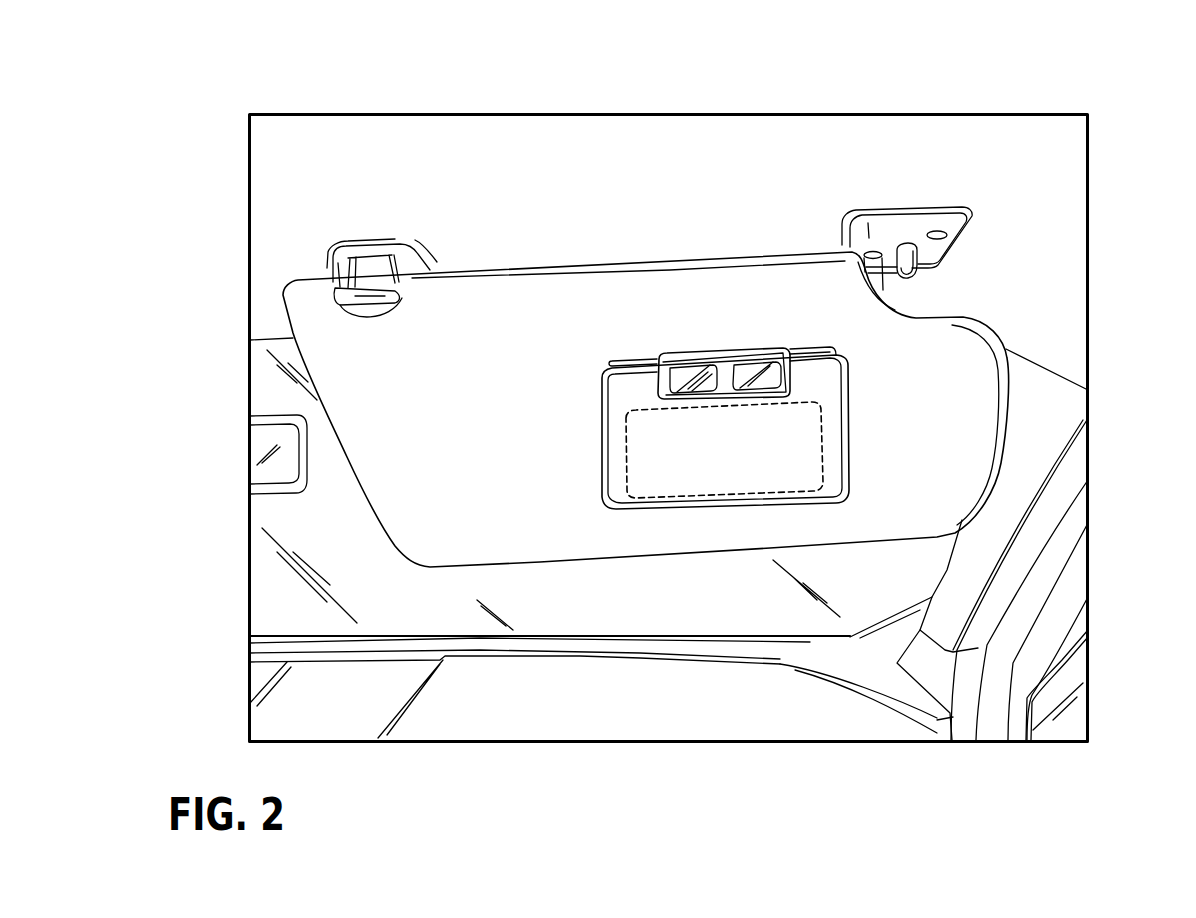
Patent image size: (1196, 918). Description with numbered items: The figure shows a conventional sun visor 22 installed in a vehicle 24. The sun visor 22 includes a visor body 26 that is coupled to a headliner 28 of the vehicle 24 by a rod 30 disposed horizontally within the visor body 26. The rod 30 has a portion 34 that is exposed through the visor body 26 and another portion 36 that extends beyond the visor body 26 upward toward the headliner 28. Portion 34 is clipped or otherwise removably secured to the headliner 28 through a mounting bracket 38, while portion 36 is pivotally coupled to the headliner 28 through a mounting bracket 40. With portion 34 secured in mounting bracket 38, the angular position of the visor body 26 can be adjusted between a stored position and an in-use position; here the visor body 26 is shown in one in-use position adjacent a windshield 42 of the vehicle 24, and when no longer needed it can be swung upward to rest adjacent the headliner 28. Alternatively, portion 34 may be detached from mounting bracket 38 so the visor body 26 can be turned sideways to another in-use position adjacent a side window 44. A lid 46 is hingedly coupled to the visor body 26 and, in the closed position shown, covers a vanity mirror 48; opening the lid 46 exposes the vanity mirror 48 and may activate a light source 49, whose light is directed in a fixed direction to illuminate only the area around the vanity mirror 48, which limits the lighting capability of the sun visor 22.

The sun visor 22 is at (965, 303).
The vehicle 24 is at (1047, 95).
The visor body 26 is at (930, 430).
The headliner 28 is at (712, 155).
The rod 30 is at (888, 240).
The portion 34 is at (335, 290).
The portion 36 is at (947, 265).
The mounting bracket 38 is at (370, 270).
The mounting bracket 40 is at (884, 243).
The windshield 42 is at (342, 565).
The side window 44 is at (1060, 603).
The lid 46 is at (743, 468).
The vanity mirror 48 is at (655, 509).
The light source 49 is at (602, 393).